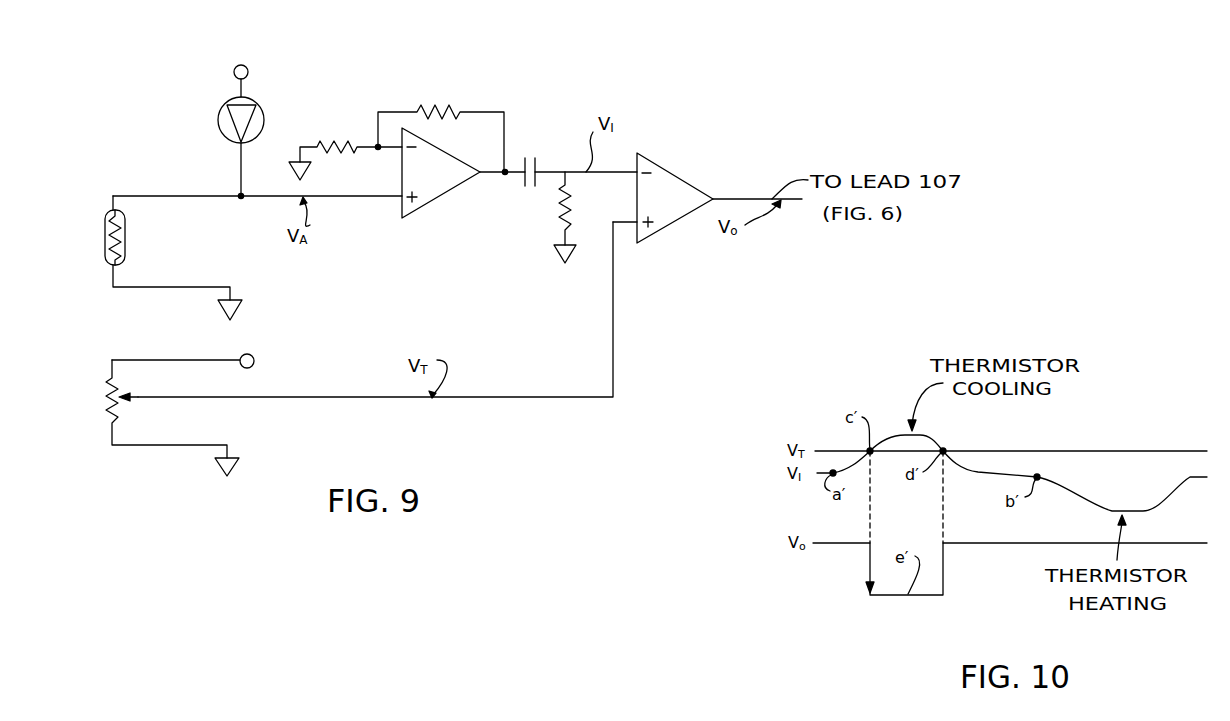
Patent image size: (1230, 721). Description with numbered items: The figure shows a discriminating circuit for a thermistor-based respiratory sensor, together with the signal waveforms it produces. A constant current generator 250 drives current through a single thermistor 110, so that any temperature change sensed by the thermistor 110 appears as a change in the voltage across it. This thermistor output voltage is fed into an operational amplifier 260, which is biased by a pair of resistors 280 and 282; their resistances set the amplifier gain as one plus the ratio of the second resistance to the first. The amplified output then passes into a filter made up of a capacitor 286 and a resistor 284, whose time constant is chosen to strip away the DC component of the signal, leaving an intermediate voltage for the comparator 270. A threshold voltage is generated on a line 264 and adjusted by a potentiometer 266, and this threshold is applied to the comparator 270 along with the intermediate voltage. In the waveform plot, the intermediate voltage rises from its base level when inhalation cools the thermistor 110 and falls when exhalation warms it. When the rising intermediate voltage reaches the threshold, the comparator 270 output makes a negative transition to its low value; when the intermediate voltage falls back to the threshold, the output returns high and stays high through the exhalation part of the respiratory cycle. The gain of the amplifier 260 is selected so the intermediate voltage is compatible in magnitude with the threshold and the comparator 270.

The thermistor 110 is at (105, 238).
The constant current generator 250 is at (225, 110).
The operational amplifier 260 is at (441, 195).
The line 264 is at (381, 398).
The potentiometer 266 is at (110, 399).
The comparator 270 is at (683, 178).
The resistor 280 is at (322, 145).
The resistor 282 is at (422, 110).
The resistor 284 is at (565, 212).
The capacitor 286 is at (540, 158).